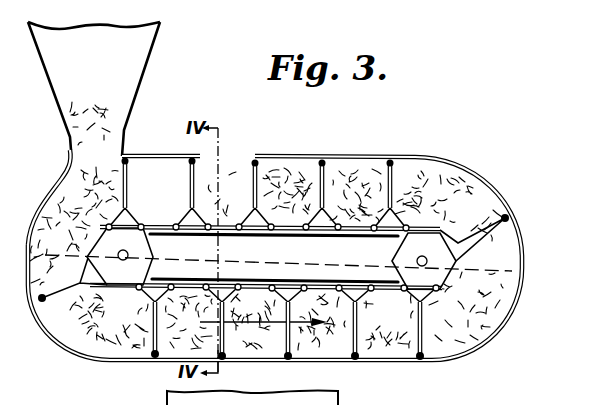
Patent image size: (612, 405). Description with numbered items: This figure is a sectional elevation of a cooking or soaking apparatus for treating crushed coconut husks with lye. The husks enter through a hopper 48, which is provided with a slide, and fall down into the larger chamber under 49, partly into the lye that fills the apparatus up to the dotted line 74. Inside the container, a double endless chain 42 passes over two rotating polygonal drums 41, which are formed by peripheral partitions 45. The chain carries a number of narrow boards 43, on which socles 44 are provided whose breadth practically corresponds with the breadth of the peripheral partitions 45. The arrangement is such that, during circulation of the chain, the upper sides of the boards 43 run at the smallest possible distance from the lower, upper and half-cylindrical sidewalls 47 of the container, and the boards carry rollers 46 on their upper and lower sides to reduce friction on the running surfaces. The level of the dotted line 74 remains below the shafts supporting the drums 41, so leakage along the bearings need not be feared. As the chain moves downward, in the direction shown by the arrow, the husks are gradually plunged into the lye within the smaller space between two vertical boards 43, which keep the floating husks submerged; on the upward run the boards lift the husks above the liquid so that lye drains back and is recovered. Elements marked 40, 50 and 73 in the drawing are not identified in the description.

The conveyor belt 40 is at (300, 237).
The rotating polygonal drum 41 is at (402, 259).
The double endless chain 42 is at (379, 293).
The board 43 is at (404, 160).
The socle 44 is at (244, 238).
The peripheral partition 45 is at (482, 229).
The roller 46 is at (332, 158).
The sidewall of the container 47 is at (452, 163).
The hopper 48 is at (132, 72).
The larger chamber 49 is at (98, 152).
The post 50 is at (192, 197).
The material chamber 73 is at (232, 176).
The dotted line 74 is at (265, 276).